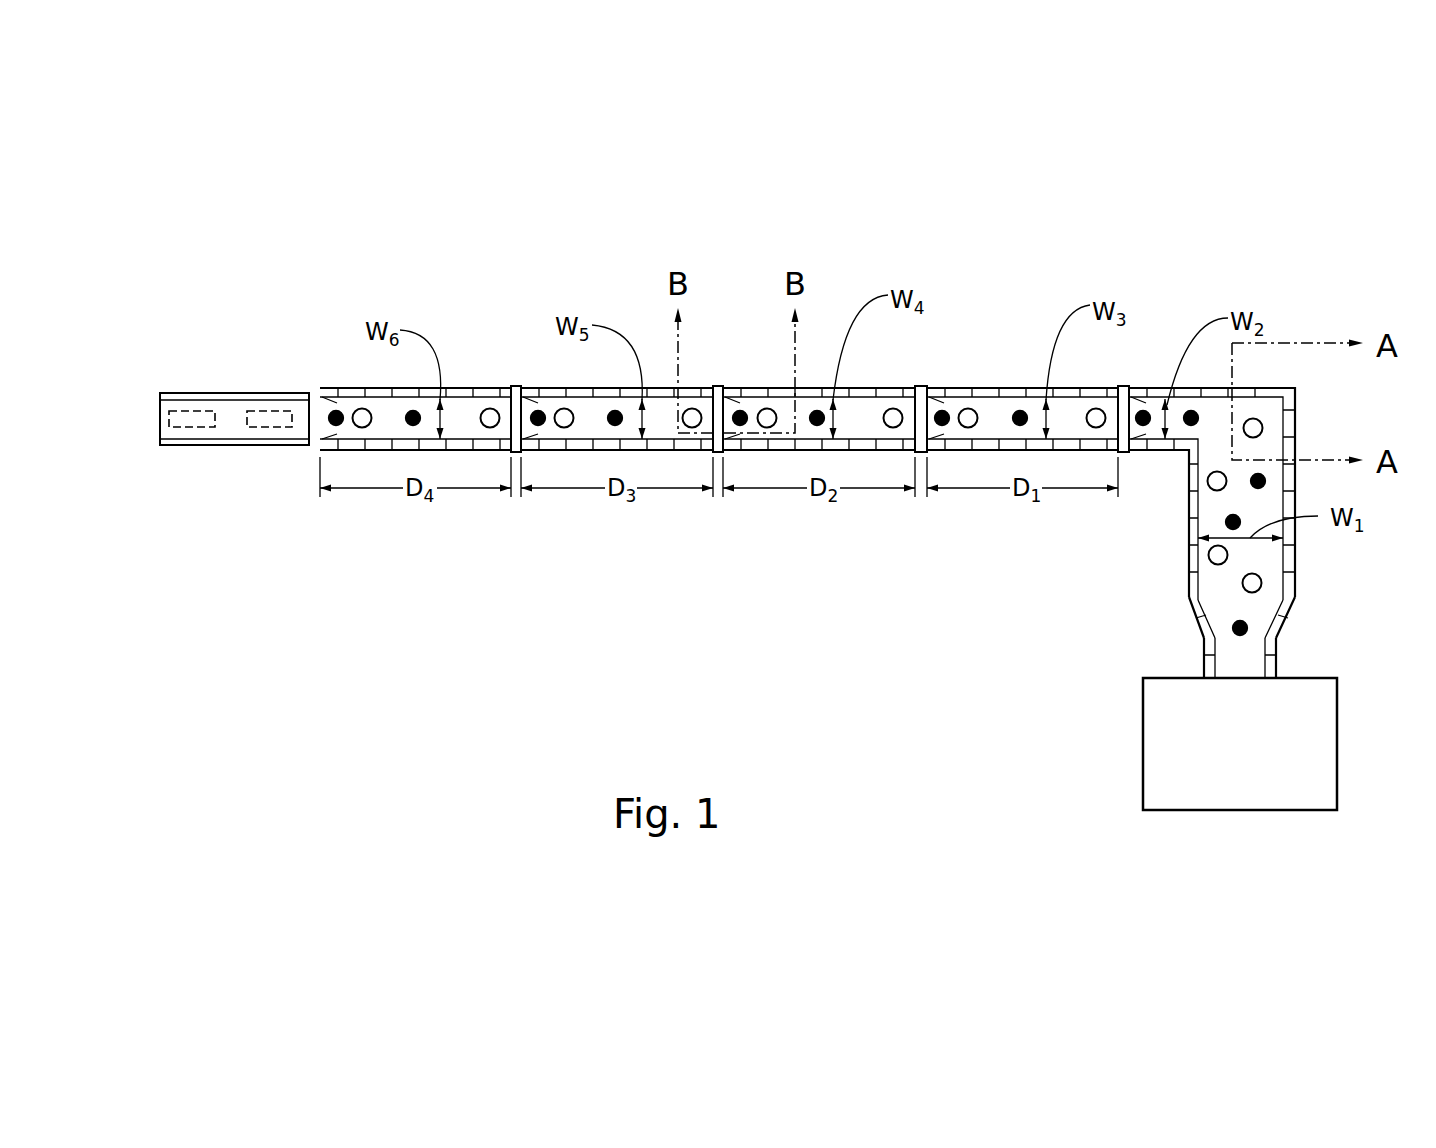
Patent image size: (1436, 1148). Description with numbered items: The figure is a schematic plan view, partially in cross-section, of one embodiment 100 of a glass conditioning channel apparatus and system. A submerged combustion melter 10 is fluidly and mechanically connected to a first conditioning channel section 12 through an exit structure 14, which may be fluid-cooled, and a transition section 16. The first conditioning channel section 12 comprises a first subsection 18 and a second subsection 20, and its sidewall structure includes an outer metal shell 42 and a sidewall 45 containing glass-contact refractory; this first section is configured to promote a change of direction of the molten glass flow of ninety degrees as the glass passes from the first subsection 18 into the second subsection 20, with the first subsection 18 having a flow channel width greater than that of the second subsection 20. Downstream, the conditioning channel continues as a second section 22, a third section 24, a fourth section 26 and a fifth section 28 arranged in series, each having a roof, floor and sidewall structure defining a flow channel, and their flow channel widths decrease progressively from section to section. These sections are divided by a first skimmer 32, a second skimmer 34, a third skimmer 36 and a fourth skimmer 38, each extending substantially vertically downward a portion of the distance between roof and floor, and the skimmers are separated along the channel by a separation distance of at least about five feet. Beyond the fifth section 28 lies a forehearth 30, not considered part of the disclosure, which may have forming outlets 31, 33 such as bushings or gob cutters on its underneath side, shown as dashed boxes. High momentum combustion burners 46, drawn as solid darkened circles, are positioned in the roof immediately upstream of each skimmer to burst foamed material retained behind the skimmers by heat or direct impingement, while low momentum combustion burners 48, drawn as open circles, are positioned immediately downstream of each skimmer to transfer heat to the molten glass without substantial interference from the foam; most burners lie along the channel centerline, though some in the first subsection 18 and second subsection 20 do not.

The embodiment of apparatus and system 100 is at (1168, 240).
The submerged combustion melter 10 is at (1265, 753).
The first conditioning channel section 12 is at (1189, 545).
The exit structure 14 is at (1270, 655).
The transition section 16 is at (1287, 615).
The first subsection 18 is at (1295, 565).
The second subsection 20 is at (1255, 369).
The second section 22 is at (988, 388).
The third section 24 is at (870, 388).
The fourth section 26 is at (576, 388).
The fifth section 28 is at (357, 388).
The forehearth 30 is at (237, 392).
The forming outlet 31 is at (200, 410).
The first skimmer 32 is at (1124, 386).
The forming outlet 33 is at (280, 428).
The second skimmer 34 is at (926, 386).
The third skimmer 36 is at (718, 386).
The fourth skimmer 38 is at (515, 386).
The outer metal shell 42 is at (1295, 485).
The sidewall 45 is at (1198, 565).
The high momentum combustion burner 46 is at (1240, 628).
The low momentum combustion burner 48 is at (1217, 481).